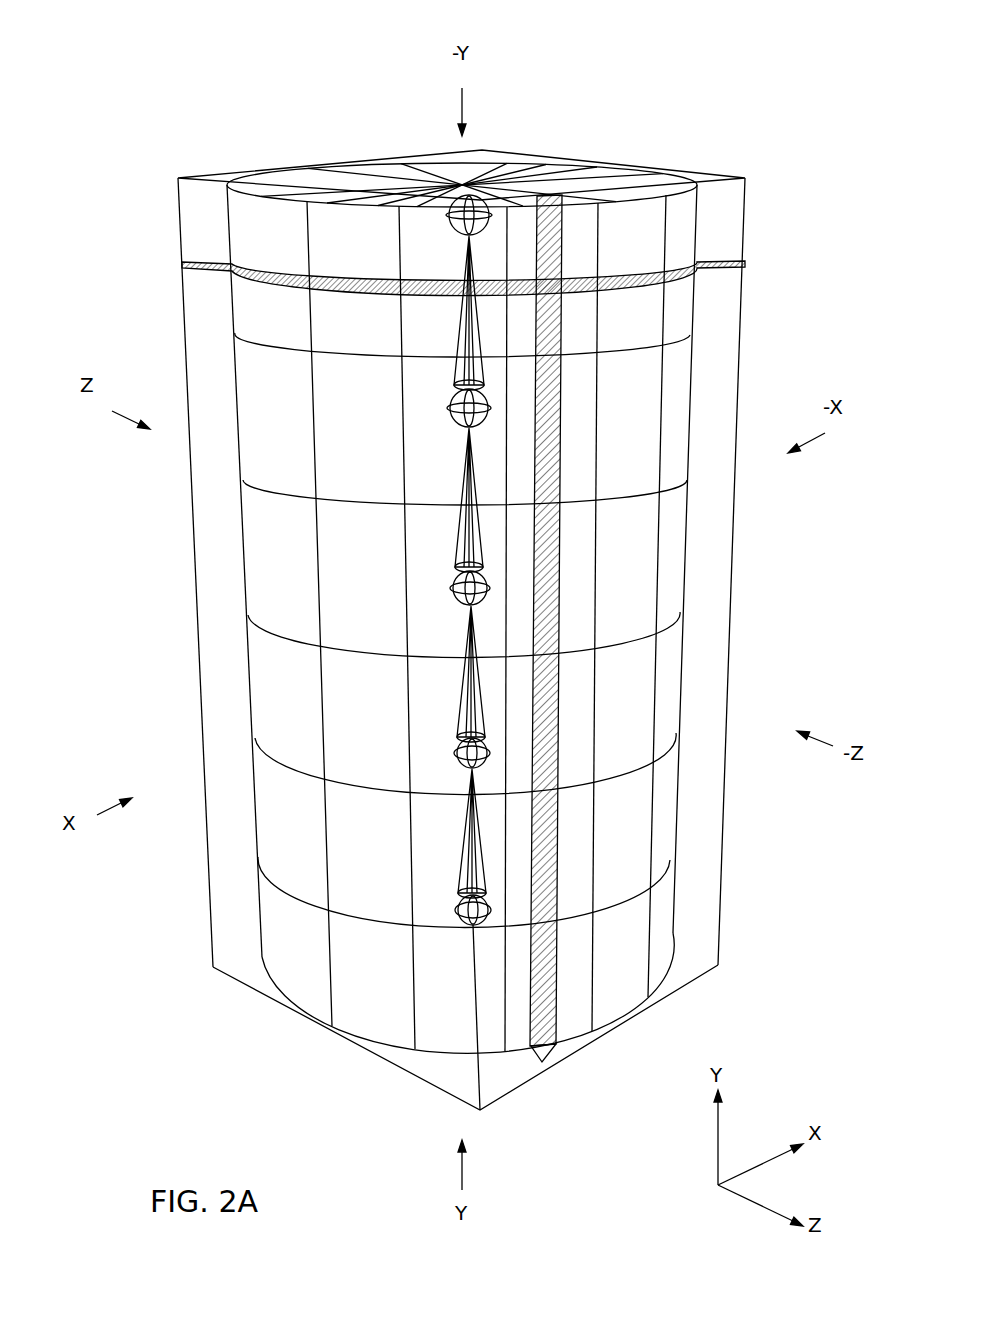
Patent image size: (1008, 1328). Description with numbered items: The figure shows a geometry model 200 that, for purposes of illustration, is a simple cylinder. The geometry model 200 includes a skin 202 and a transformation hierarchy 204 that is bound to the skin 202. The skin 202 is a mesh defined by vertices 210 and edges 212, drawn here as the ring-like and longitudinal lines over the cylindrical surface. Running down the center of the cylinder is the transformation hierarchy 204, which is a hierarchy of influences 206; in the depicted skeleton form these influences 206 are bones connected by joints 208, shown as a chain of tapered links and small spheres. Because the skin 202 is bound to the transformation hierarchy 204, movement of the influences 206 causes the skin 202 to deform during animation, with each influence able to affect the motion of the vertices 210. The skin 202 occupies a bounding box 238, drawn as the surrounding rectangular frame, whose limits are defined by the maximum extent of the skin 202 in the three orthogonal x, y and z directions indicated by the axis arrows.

The geometry model 200 is at (676, 50).
The skin 202 is at (675, 830).
The transformation hierarchy 204 is at (458, 330).
The influences 206 is at (453, 367).
The joints 208 is at (454, 205).
The vertices 210 is at (663, 338).
The edges 212 is at (660, 577).
The bounding box 238 is at (697, 980).